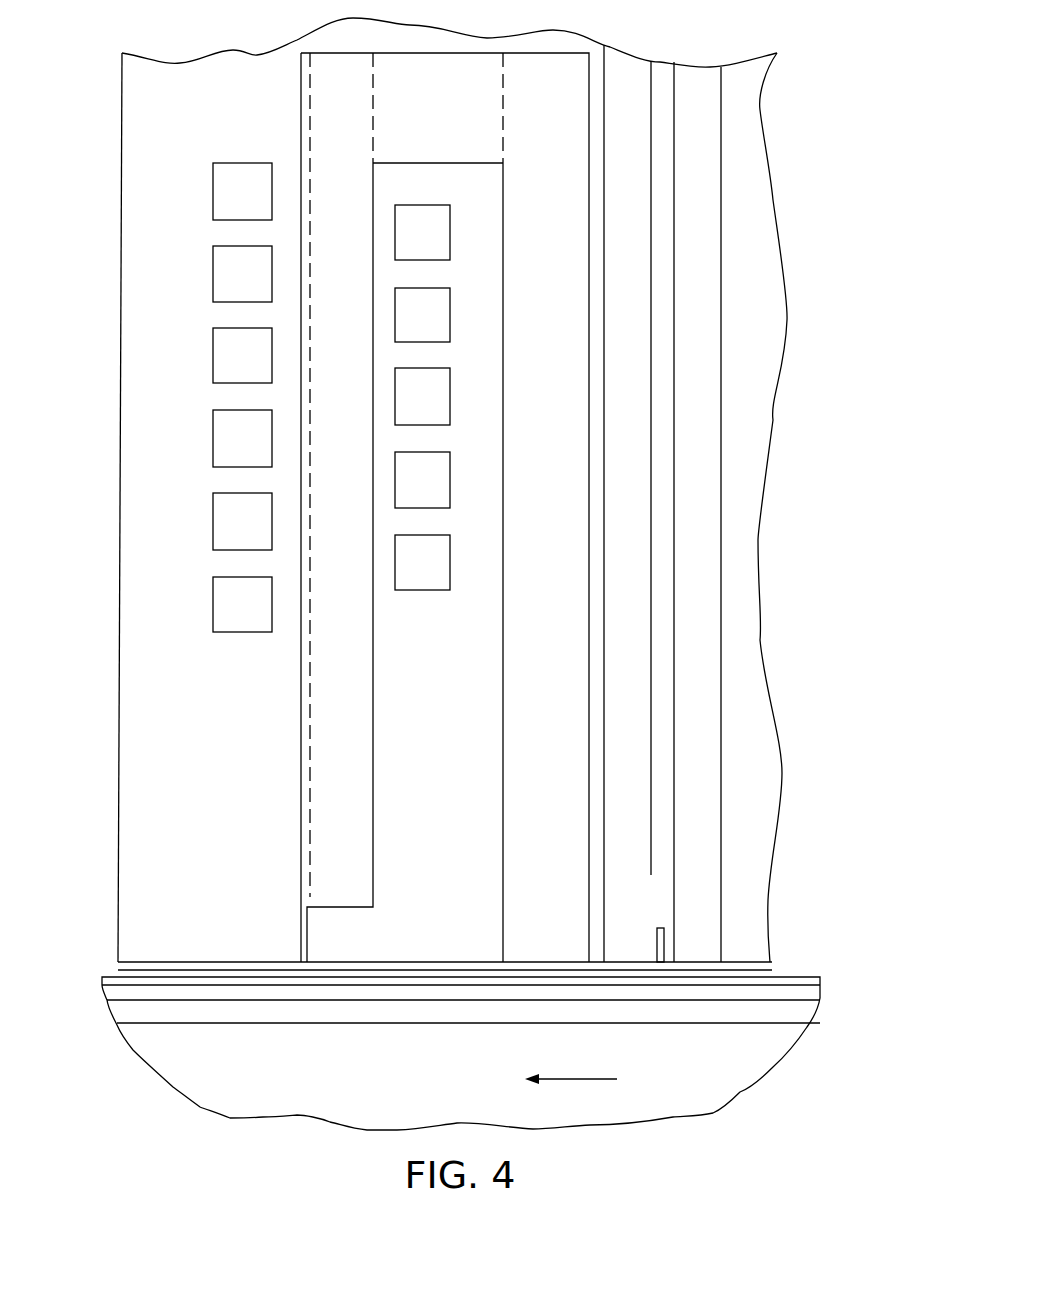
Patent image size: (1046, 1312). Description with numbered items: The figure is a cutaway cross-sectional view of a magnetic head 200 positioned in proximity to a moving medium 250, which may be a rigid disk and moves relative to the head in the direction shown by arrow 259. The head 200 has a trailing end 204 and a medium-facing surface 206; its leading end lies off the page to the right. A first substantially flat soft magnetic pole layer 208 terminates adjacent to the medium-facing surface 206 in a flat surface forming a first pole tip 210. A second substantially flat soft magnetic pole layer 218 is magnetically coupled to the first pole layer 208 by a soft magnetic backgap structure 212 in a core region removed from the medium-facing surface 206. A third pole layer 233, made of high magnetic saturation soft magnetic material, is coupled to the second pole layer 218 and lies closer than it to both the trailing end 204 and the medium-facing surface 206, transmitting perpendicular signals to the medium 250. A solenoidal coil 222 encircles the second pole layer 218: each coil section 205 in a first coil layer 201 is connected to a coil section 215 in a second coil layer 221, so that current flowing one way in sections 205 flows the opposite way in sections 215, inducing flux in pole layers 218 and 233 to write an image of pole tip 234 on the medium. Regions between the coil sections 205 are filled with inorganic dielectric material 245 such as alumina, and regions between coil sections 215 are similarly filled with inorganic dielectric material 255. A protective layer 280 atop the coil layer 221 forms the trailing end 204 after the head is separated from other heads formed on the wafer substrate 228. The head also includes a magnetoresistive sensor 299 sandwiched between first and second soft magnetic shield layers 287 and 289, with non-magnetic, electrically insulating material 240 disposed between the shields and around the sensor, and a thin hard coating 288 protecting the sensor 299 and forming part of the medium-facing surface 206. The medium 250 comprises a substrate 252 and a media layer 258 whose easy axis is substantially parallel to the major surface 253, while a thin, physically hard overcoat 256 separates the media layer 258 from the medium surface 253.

The magnetic head 200 is at (796, 79).
The first coil layer 201 is at (421, 192).
The trailing end 204 is at (113, 633).
The coil sections 205 is at (450, 335).
The medium-facing surface 206 is at (178, 980).
The first pole layer 208 is at (523, 455).
The first pole tip 210 is at (542, 972).
The backgap structure 212 is at (413, 97).
The coil sections 215 is at (213, 367).
The second pole layer 218 is at (319, 457).
The second coil layer 221 is at (242, 150).
The solenoidal coil 222 is at (212, 640).
The wafer substrate 228 is at (726, 759).
The third pole layer 233 is at (297, 865).
The pole tip 234 is at (300, 972).
The non-magnetic electrically insulating material 240 is at (667, 312).
The inorganic dielectric material 245 is at (399, 532).
The medium 250 is at (130, 1128).
The substrate 252 is at (439, 1077).
The major surface 253 is at (803, 965).
The inorganic dielectric material 255 is at (219, 574).
The overcoat 256 is at (367, 1025).
The media layer 258 is at (725, 1002).
The arrow 259 is at (568, 1080).
The protective layer 280 is at (139, 524).
The first shield layer 287 is at (678, 629).
The hard coating 288 is at (745, 952).
The second shield layer 289 is at (606, 629).
The magnetoresistive sensor 299 is at (657, 930).